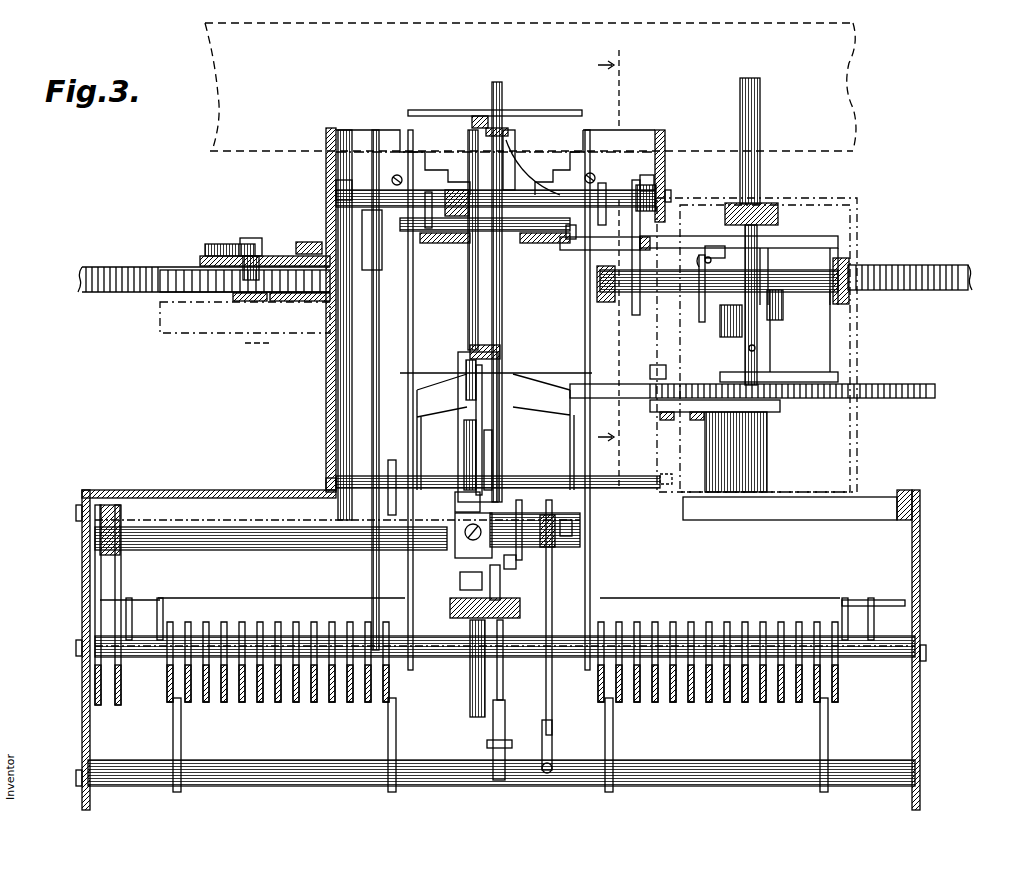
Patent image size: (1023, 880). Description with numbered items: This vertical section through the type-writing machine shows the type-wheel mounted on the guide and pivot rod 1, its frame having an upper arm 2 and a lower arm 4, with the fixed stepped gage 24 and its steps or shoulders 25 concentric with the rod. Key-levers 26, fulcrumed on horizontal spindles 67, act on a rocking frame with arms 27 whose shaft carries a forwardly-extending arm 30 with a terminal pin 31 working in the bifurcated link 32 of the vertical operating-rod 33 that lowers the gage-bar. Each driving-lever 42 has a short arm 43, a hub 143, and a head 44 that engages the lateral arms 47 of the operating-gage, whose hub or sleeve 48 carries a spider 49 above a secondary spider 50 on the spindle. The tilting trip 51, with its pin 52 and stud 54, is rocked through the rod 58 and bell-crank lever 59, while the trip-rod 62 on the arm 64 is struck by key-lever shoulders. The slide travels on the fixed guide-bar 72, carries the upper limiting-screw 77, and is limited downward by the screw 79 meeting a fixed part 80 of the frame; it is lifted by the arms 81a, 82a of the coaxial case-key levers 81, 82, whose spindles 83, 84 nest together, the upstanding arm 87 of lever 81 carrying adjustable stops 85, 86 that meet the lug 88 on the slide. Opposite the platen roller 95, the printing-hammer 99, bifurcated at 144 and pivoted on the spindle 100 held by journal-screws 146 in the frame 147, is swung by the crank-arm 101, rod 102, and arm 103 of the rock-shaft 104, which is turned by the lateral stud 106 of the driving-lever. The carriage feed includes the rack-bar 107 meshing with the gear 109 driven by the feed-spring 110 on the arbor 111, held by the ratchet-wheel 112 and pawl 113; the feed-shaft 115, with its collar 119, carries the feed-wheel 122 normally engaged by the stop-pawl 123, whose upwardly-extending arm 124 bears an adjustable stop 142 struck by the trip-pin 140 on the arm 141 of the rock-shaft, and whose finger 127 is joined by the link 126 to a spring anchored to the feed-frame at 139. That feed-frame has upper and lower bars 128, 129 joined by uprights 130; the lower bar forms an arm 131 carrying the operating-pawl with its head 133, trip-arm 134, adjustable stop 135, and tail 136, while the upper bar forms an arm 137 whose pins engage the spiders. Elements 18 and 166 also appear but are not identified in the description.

The guide and pivot rod 1 is at (503, 300).
The upper arm 2 is at (548, 112).
The lower arm 4 is at (525, 265).
The link 18 is at (500, 586).
The stepped gage 24 is at (600, 125).
The steps or shoulders 25 is at (486, 134).
The key-levers 26 is at (288, 702).
The arms of rocking frame 27 is at (512, 745).
The forwardly-extending arm 30 is at (520, 786).
The terminal pin 31 is at (487, 744).
The bifurcated link 32 is at (505, 712).
The vertical operating-rod 33 is at (503, 668).
The driving-lever 42 is at (468, 320).
The short arm 43 is at (150, 598).
The head 44 is at (462, 188).
The lateral arms 47 is at (440, 194).
The hub or sleeve 48 is at (512, 162).
The spider 49 is at (445, 243).
The secondary spider 50 is at (525, 243).
The tilting trip 51 is at (580, 524).
The pin 52 is at (522, 512).
The stud 54 is at (524, 560).
The rod 58 is at (552, 742).
The bell-crank lever 59 is at (552, 586).
The trip-rod 62 is at (106, 606).
The arm 64 is at (517, 618).
The horizontal spindle 67 is at (436, 658).
The fixed guide-bar 72 is at (470, 665).
The upper limiting-screw 77 is at (500, 490).
The screw 79 is at (460, 582).
The fixed part of frame 80 is at (450, 614).
The case-key lever 81 is at (82, 568).
The arm 81a is at (456, 556).
The case-key lever 82 is at (120, 565).
The arm 82a is at (455, 516).
The spindle 83 is at (242, 518).
The hollow spindle 84 is at (240, 550).
The adjustable stop 85 is at (464, 400).
The adjustable stop 86 is at (470, 348).
The upstanding arm 87 is at (460, 448).
The lug 88 is at (455, 500).
The roller 95 is at (530, 87).
The printing-hammer 99 is at (501, 92).
The spindle 100 is at (352, 476).
The crank-arm 101 is at (392, 460).
The rod 102 is at (372, 324).
The arm 103 is at (495, 169).
The rock-shaft 104 is at (336, 186).
The lateral stud 106 is at (400, 232).
The rack-bar 107 is at (96, 268).
The gear 109 is at (172, 270).
The feed-spring 110 is at (190, 334).
The arbor 111 is at (248, 238).
The ratchet-wheel 112 is at (222, 236).
The pawl 113 is at (298, 242).
The feed-shaft 115 is at (770, 140).
The collar 119 is at (783, 320).
The feed-wheel 122 is at (890, 398).
The stop-pawl 123 is at (749, 349).
The upwardly-extending arm 124 is at (652, 240).
The link 126 is at (702, 312).
The forwardly-extending finger 127 is at (716, 262).
The upper bar 128 is at (812, 236).
The lower bar 129 is at (792, 372).
The uprights 130 is at (680, 328).
The arm 131 is at (652, 365).
The head 133 is at (626, 390).
The trip-arm 134 is at (670, 420).
The adjustable stop 135 is at (700, 420).
The tail 136 is at (770, 410).
The arm 137 is at (612, 240).
The spring connection 139 is at (706, 246).
The trip-pin 140 is at (665, 165).
The arm 141 is at (671, 195).
The adjustable stop 142 is at (645, 172).
The hubs 143 is at (286, 598).
The bifurcated lower end 144 is at (520, 392).
The journal-screws 146 is at (326, 480).
The frame 147 is at (326, 384).
The part 166 is at (572, 240).